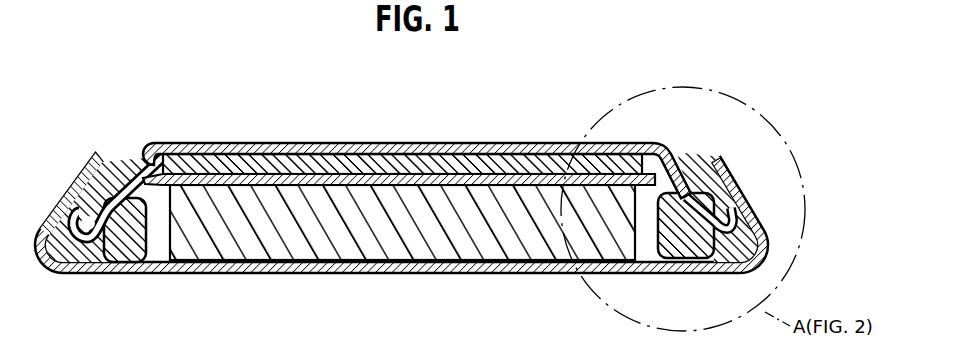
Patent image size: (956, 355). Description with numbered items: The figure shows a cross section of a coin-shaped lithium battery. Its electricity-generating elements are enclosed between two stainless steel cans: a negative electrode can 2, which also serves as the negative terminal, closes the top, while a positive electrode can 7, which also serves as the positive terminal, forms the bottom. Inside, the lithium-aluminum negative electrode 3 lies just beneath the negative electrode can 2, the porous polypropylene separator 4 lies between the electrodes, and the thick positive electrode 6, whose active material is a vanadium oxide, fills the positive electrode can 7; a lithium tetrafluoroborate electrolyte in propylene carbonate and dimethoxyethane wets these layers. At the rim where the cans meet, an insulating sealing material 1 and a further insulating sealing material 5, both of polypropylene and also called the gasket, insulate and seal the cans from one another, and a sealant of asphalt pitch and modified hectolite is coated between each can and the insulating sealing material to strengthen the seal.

The insulating sealing material 1 is at (125, 152).
The negative electrode can 2 is at (232, 143).
The negative electrode 3 is at (325, 158).
The separator 4 is at (410, 177).
The insulating sealing material 5 is at (108, 262).
The positive electrode 6 is at (328, 248).
The positive electrode can 7 is at (258, 274).